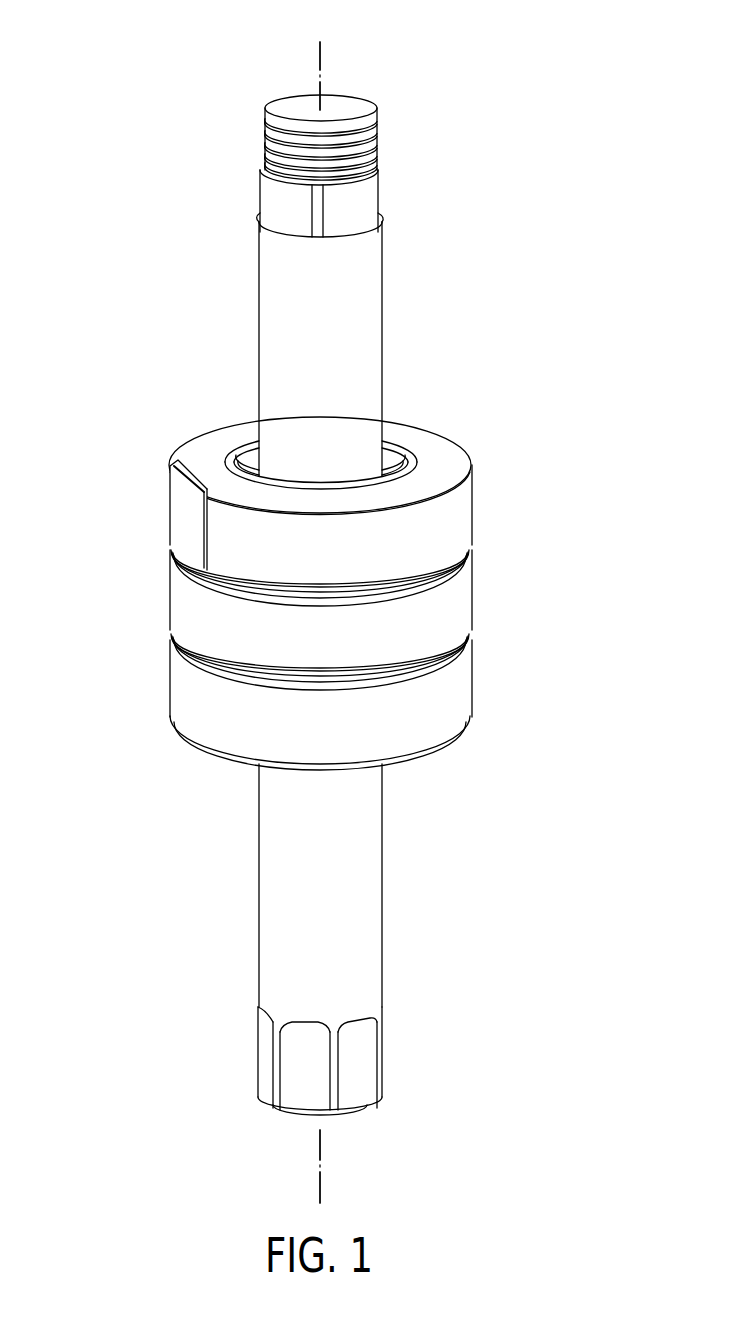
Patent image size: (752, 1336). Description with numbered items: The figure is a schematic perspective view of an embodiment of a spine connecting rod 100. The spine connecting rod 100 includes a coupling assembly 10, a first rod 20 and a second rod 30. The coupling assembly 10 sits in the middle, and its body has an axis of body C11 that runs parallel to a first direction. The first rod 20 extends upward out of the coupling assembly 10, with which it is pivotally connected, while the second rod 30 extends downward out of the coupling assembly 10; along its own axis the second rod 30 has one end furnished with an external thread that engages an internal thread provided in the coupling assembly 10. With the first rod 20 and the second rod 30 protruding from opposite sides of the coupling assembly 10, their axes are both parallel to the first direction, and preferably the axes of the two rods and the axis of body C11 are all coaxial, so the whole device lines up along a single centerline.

The spine connecting rod 100 is at (268, 601).
The coupling assembly 10 is at (168, 498).
The first rod 20 is at (259, 322).
The second rod 30 is at (258, 919).
The axis of body C11 is at (384, 601).